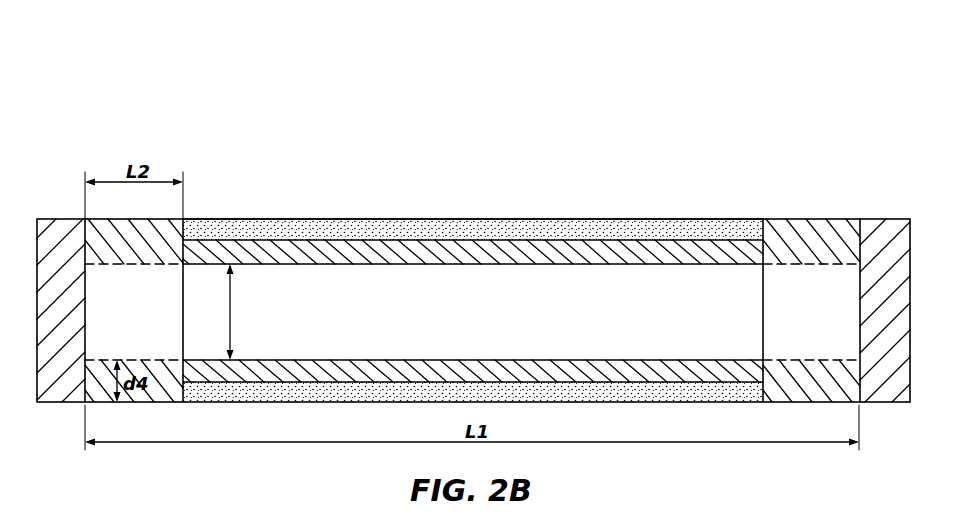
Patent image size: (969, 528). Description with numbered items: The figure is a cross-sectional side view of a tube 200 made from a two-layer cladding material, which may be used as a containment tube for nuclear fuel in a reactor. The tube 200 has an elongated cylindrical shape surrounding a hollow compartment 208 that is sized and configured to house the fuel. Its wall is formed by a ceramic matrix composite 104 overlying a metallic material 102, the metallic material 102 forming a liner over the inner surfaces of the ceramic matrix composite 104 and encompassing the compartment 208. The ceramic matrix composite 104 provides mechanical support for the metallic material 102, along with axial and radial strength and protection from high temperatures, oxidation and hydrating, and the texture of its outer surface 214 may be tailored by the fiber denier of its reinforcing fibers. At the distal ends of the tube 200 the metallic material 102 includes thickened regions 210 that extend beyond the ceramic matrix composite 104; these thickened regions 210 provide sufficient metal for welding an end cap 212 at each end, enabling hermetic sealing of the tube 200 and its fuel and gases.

The tube 200 is at (588, 82).
The end cap 212 is at (61, 238).
The thickened regions 210 is at (800, 240).
The metallic material 102 is at (297, 248).
The ceramic matrix composite 104 is at (528, 230).
The outer surface 214 is at (658, 218).
The hollow compartment 208 is at (403, 292).